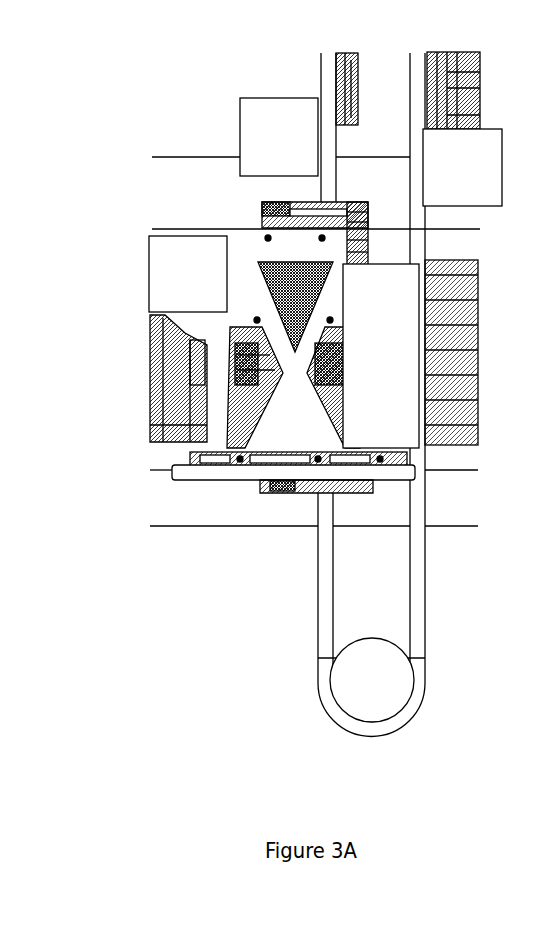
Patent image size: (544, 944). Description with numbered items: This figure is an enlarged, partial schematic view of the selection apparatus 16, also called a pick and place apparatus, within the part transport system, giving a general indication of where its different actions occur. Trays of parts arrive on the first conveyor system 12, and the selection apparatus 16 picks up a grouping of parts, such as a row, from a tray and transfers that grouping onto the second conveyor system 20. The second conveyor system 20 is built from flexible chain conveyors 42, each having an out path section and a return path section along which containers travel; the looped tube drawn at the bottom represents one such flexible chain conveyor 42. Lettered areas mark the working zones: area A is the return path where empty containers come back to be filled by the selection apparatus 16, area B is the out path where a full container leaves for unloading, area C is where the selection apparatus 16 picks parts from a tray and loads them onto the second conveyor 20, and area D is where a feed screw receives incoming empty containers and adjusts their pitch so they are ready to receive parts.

The second conveyor system 20 is at (261, 68).
The first conveyor system 12 is at (89, 252).
The selection apparatus 16 is at (147, 494).
The flexible chain conveyor 42 is at (423, 567).